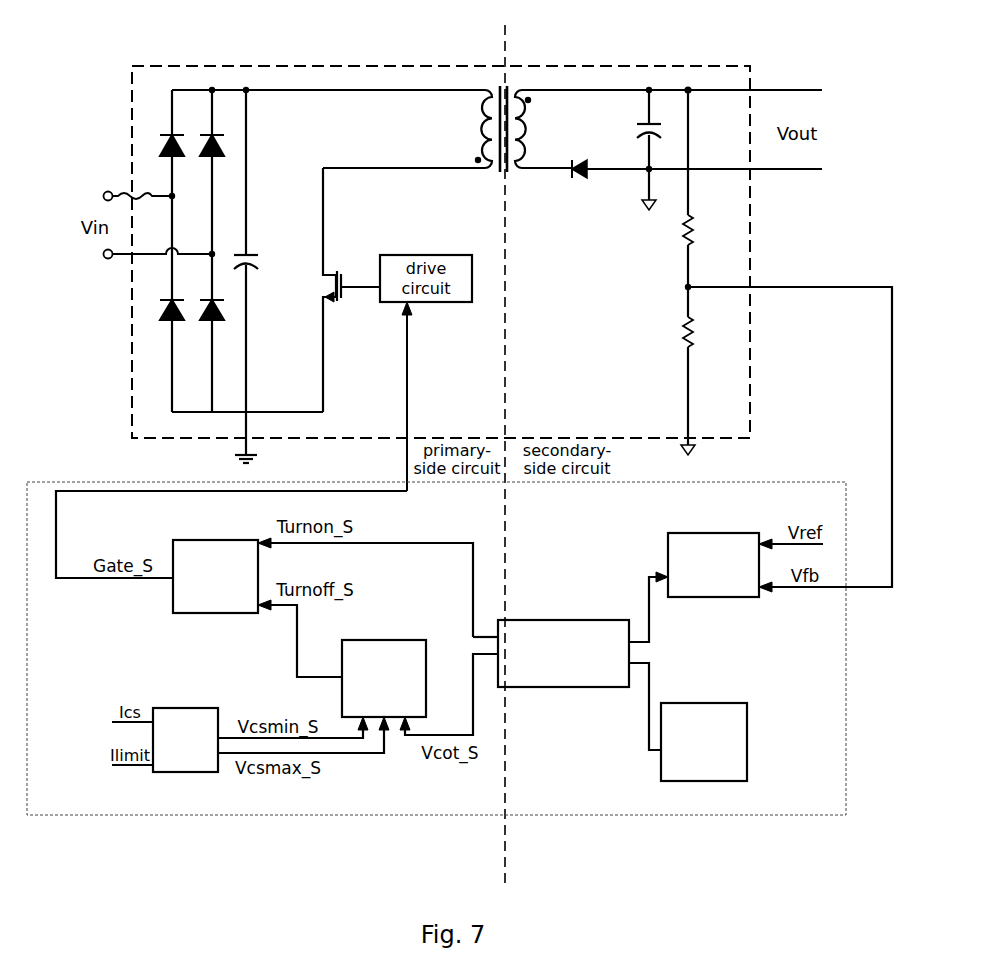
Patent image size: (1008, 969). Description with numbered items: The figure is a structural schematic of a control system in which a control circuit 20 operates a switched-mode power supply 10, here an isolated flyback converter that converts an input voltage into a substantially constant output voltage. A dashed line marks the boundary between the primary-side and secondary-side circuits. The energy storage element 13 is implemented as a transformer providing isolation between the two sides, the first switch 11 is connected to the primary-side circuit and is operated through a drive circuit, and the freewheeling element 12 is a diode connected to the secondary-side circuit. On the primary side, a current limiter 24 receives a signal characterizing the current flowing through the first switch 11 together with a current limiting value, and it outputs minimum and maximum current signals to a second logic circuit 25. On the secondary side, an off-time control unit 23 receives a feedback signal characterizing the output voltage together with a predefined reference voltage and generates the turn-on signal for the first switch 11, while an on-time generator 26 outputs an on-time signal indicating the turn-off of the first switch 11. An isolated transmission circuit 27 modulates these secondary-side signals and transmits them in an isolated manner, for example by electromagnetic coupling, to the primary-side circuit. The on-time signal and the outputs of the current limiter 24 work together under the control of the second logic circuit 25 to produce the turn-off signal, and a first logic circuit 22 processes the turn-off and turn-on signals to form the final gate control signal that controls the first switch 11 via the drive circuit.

The switched-mode power supply 10 is at (615, 62).
The first switch 11 is at (333, 308).
The freewheeling element 12 is at (590, 176).
The energy storage element 13 is at (481, 172).
The control circuit 20 is at (436, 648).
The first logic circuit 22 is at (215, 614).
The off-time control unit 23 is at (685, 533).
The current limiter 24 is at (207, 772).
The second logic circuit 25 is at (392, 640).
The on-time generator 26 is at (712, 703).
The isolated transmission circuit 27 is at (531, 620).